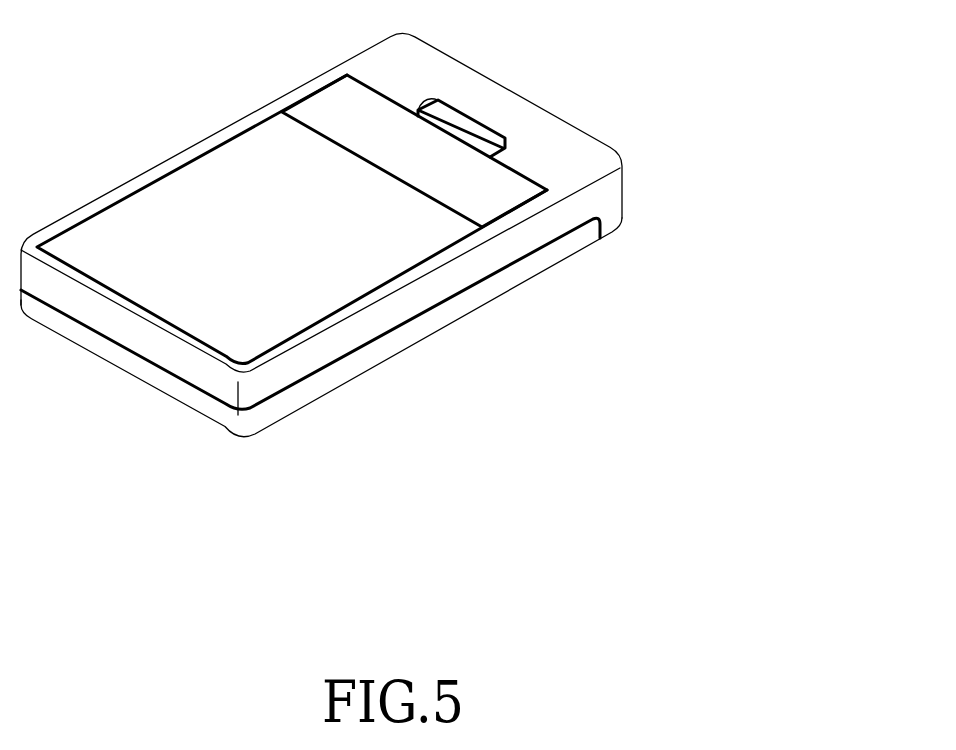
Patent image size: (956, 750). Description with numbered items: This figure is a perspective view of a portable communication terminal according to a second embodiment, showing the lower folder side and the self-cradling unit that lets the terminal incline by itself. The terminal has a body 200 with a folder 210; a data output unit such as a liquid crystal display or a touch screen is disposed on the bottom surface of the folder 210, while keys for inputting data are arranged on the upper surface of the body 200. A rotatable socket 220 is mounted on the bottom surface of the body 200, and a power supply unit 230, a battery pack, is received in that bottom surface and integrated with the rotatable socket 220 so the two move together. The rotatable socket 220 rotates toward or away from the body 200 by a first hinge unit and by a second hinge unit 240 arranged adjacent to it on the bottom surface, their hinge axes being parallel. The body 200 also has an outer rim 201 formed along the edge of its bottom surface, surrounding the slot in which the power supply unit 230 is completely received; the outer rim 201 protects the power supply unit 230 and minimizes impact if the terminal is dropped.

The body 200 is at (689, 180).
The outer rim 201 is at (417, 271).
The folder 210 is at (337, 371).
The rotatable socket 220 is at (327, 102).
The power supply unit 230 is at (167, 192).
The second hinge unit 240 is at (458, 126).